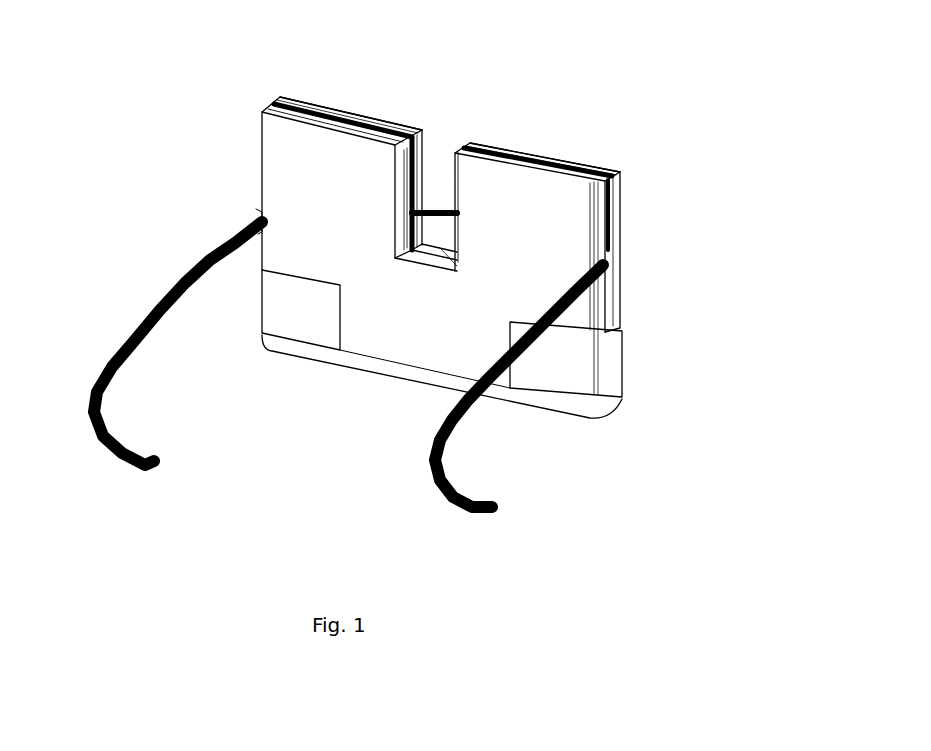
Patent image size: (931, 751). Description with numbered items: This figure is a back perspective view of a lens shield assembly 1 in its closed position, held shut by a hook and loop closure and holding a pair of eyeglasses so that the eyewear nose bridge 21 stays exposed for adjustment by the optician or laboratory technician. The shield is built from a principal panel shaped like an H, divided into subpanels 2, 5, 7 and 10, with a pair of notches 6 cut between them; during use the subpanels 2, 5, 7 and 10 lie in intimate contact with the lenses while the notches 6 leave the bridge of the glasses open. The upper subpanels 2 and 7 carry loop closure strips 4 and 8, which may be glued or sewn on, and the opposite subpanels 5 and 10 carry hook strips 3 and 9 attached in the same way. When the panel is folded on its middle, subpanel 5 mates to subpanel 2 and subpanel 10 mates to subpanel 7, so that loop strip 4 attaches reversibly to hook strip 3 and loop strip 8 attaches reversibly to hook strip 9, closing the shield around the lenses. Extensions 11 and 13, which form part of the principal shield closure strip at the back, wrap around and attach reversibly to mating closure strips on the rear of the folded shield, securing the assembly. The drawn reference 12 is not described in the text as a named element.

The lens shield assembly 1 is at (458, 255).
The subpanel 2 is at (312, 103).
The hook strip 3 is at (330, 110).
The loop closure strip 4 is at (360, 115).
The subpanel 5 is at (325, 172).
The notch 6 is at (442, 157).
The subpanel 7 is at (502, 151).
The loop closure strip 8 is at (548, 158).
The hook strip 9 is at (583, 167).
The subpanel 10 is at (542, 205).
The extension 11 is at (567, 362).
The spring arm 12 is at (457, 443).
The extension 13 is at (275, 312).
The eyewear nose bridge 21 is at (520, 150).